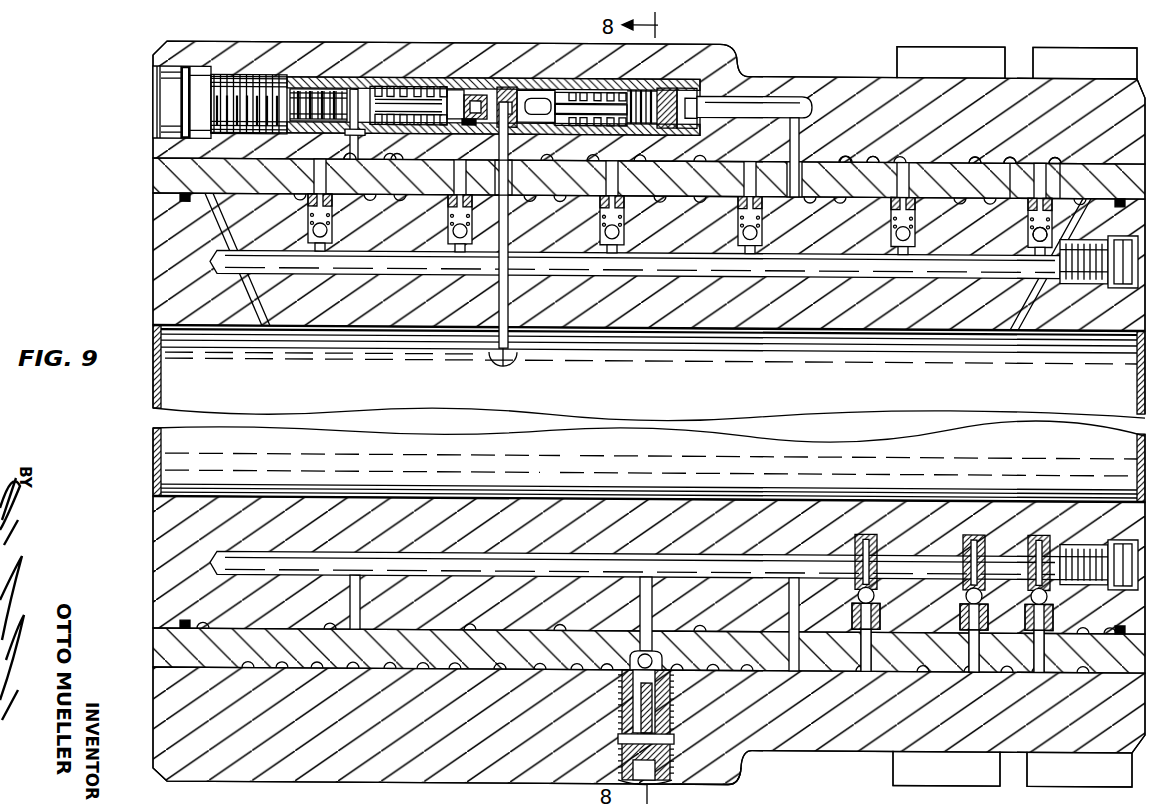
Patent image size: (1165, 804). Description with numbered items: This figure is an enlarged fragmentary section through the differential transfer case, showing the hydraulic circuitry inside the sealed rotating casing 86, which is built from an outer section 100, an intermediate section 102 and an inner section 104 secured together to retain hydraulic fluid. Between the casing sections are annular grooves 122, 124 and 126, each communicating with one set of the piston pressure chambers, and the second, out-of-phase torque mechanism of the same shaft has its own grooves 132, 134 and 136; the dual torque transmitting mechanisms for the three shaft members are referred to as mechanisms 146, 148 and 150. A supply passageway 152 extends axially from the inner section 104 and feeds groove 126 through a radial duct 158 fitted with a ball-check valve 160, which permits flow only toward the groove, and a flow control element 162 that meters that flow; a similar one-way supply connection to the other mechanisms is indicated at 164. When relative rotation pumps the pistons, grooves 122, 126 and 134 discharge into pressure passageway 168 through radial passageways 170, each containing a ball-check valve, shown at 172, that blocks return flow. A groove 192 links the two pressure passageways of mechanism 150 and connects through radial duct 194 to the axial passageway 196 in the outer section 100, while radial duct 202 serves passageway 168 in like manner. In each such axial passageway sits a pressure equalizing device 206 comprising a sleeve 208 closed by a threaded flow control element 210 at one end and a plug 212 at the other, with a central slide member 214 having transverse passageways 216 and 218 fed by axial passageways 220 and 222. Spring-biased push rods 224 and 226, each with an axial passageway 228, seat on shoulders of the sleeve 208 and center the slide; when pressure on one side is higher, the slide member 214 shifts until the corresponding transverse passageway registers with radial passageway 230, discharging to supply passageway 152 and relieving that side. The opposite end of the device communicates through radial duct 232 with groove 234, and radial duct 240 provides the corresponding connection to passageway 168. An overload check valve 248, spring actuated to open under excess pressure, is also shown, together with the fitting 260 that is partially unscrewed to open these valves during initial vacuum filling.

The casing 86 is at (818, 74).
The outer section 100 is at (1142, 100).
The intermediate section 102 is at (1142, 180).
The inner section 104 is at (1142, 302).
The annular groove 122 is at (975, 157).
The annular groove 124 is at (1010, 157).
The annular groove 126 is at (1056, 157).
The annular groove 132 is at (846, 157).
The annular groove 134 is at (873, 157).
The annular groove 136 is at (900, 157).
The dual torque transmitting mechanism 146 is at (971, 486).
The dual torque transmitting mechanism 148 is at (665, 488).
The dual torque transmitting mechanism 150 is at (350, 488).
The supply passageway 152 is at (680, 266).
The radial duct 158 is at (1030, 177).
The ball-check valve 160 is at (1028, 231).
The flow control element 162 is at (1052, 203).
The supply connection 164 is at (490, 346).
The pressure passageway 168 is at (890, 557).
The radial passageway 170 is at (860, 648).
The check valve 172 is at (881, 595).
The groove 192 is at (796, 194).
The radial duct 194 is at (795, 96).
The axial passageway 196 is at (752, 93).
The radial duct 202 is at (794, 578).
The pressure equalizing device 206 is at (458, 88).
The sleeve 208 is at (515, 88).
The flow control element 210 is at (682, 85).
The plug 212 is at (326, 92).
The slide member 214 is at (522, 76).
The transverse passageway 216 is at (478, 93).
The transverse passageway 218 is at (563, 90).
The axial passageway 220 is at (470, 124).
The axial passageway 222 is at (532, 112).
The push rod 224 is at (410, 98).
The push rod 226 is at (612, 90).
The axial passageway 228 is at (400, 110).
The radial passageway 230 is at (508, 164).
The radial duct 232 is at (390, 162).
The groove 234 is at (350, 164).
The radial duct 240 is at (360, 552).
The overload check valve 248 is at (698, 781).
The fitting 260 is at (618, 747).